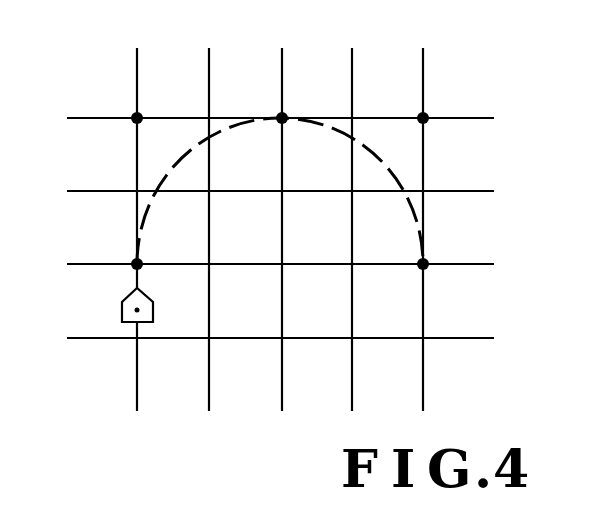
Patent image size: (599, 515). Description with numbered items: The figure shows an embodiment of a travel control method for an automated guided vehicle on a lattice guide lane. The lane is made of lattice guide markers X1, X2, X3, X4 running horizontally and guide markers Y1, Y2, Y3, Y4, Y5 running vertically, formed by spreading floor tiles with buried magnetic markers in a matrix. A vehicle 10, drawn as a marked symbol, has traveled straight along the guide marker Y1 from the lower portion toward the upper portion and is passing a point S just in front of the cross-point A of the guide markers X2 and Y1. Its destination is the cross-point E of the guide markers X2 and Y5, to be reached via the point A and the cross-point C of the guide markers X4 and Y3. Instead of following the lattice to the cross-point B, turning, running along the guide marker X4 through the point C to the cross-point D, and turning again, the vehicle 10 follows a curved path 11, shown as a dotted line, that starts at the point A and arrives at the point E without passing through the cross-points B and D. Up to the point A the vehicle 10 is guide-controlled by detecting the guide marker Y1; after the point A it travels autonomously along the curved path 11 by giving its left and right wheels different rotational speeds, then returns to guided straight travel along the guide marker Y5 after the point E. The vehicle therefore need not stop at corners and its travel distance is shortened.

The vehicle 10 is at (136, 343).
The curved path 11 is at (413, 208).
The point S is at (146, 307).
The cross-point A is at (130, 251).
The cross-point B is at (130, 103).
The cross-point C is at (274, 103).
The cross-point D is at (415, 103).
The cross-point E is at (430, 249).
The guide marker X1 is at (267, 340).
The guide marker X2 is at (267, 266).
The guide marker X3 is at (267, 193).
The guide marker X4 is at (267, 120).
The guide marker Y1 is at (137, 211).
The guide marker Y2 is at (210, 211).
The guide marker Y3 is at (283, 211).
The guide marker Y4 is at (353, 211).
The guide marker Y5 is at (424, 211).